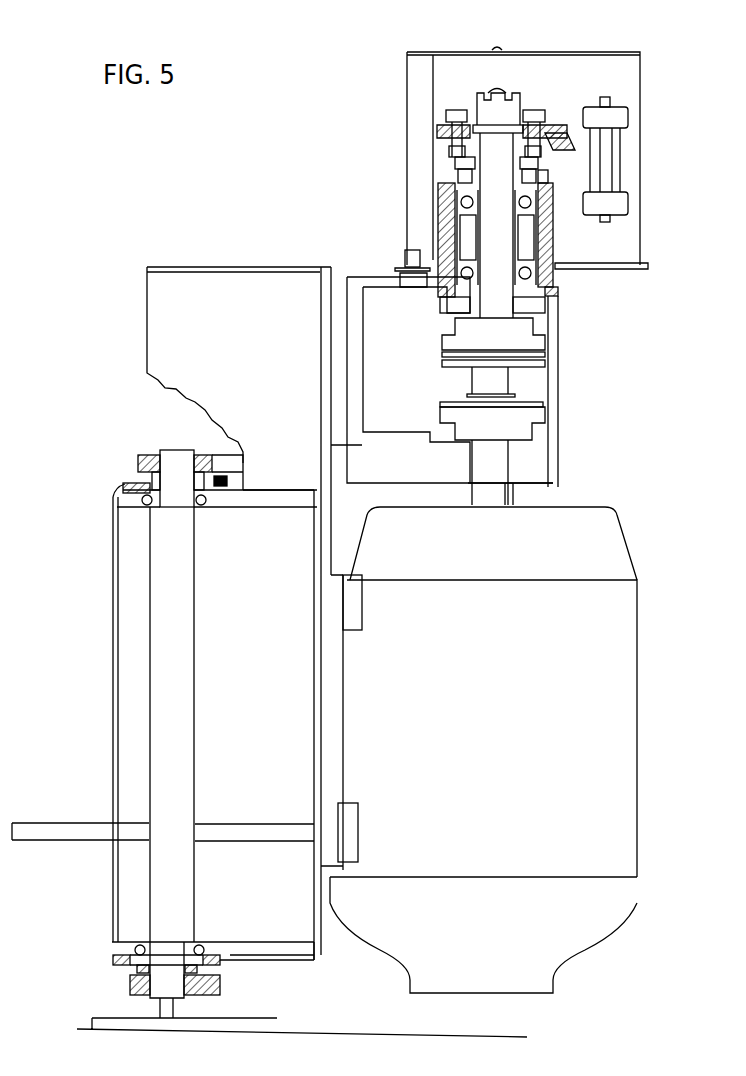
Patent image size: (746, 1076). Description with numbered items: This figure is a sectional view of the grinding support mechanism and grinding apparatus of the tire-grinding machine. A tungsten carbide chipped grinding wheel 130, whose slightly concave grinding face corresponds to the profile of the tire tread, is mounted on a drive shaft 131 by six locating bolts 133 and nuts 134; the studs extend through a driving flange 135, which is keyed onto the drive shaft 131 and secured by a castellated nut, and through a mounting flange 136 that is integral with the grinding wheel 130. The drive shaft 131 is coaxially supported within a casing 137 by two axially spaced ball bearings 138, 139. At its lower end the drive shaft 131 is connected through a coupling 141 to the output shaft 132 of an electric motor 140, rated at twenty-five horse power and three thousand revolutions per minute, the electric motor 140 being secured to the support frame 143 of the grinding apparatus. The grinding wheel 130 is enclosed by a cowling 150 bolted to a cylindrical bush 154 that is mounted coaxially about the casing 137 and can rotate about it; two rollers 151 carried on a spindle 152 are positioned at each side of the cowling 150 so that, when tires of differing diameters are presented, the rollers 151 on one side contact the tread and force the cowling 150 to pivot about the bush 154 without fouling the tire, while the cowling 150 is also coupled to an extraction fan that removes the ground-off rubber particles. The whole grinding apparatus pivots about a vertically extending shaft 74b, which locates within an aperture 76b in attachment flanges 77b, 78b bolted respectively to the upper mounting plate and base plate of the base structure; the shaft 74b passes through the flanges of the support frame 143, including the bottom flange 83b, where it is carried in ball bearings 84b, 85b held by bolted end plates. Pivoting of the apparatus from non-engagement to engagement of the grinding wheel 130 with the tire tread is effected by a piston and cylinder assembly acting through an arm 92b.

The grinding wheel 130 is at (410, 158).
The drive shaft 131 is at (490, 175).
The output shaft 132 is at (548, 497).
The locating bolts 133 is at (552, 100).
The nuts 134 is at (453, 110).
The driving flange 135 is at (572, 143).
The mounting flange 136 is at (560, 123).
The casing 137 is at (543, 236).
The ball bearing 138 is at (525, 273).
The ball bearing 139 is at (467, 195).
The electric motor 140 is at (628, 650).
The coupling 141 is at (538, 413).
The support frame 143 is at (130, 685).
The cowling 150 is at (628, 250).
The rollers 151 is at (627, 117).
The spindle 152 is at (612, 155).
The cylindrical bush 154 is at (548, 247).
The shaft 74b is at (185, 650).
The aperture 76b is at (153, 452).
The attachment flange 77b is at (237, 463).
The attachment flange 78b is at (130, 978).
The bottom flange 83b is at (290, 955).
The ball bearing 84b is at (127, 953).
The ball bearing 85b is at (127, 487).
The arm 92b is at (40, 830).